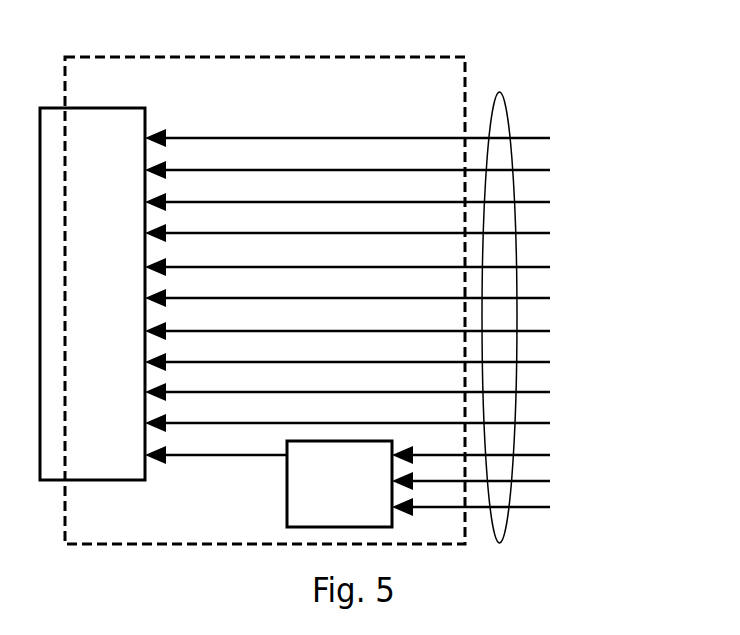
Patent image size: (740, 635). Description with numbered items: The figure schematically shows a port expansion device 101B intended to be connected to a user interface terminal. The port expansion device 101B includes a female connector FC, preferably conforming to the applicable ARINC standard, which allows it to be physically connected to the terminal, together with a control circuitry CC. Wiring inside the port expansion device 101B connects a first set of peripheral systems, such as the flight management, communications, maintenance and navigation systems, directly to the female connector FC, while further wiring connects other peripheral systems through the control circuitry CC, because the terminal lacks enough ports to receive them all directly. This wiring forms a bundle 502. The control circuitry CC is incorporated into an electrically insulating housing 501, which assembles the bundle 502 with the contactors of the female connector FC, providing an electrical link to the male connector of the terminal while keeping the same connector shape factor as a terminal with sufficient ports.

The port expansion device 101B is at (366, 292).
The electrically insulating housing 501 is at (466, 58).
The bundle 502 is at (500, 533).